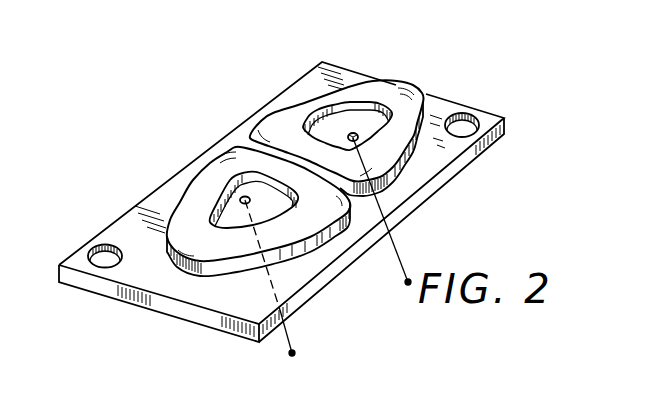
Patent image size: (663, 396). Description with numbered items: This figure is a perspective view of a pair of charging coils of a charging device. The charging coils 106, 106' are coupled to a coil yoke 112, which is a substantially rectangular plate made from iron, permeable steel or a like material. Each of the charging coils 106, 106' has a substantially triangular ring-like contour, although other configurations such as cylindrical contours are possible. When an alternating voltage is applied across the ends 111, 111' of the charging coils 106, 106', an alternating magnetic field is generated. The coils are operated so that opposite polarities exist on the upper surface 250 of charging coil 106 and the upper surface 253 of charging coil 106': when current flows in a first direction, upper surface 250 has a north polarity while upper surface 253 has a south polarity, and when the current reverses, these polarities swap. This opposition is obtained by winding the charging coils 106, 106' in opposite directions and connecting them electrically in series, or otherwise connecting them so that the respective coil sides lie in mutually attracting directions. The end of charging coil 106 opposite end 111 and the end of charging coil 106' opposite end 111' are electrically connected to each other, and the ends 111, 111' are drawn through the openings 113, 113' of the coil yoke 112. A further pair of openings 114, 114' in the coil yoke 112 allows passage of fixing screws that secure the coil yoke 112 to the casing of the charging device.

The coil yoke 112 is at (202, 302).
The opening 114 is at (494, 113).
The opening 114' is at (96, 293).
The charging coil 106 is at (234, 199).
The charging coil 106' is at (355, 119).
The opening 113 is at (218, 149).
The opening 113' is at (341, 78).
The end 111 is at (299, 278).
The end 111' is at (382, 211).
The upper surface 250 is at (197, 193).
The upper surface 253 is at (387, 163).